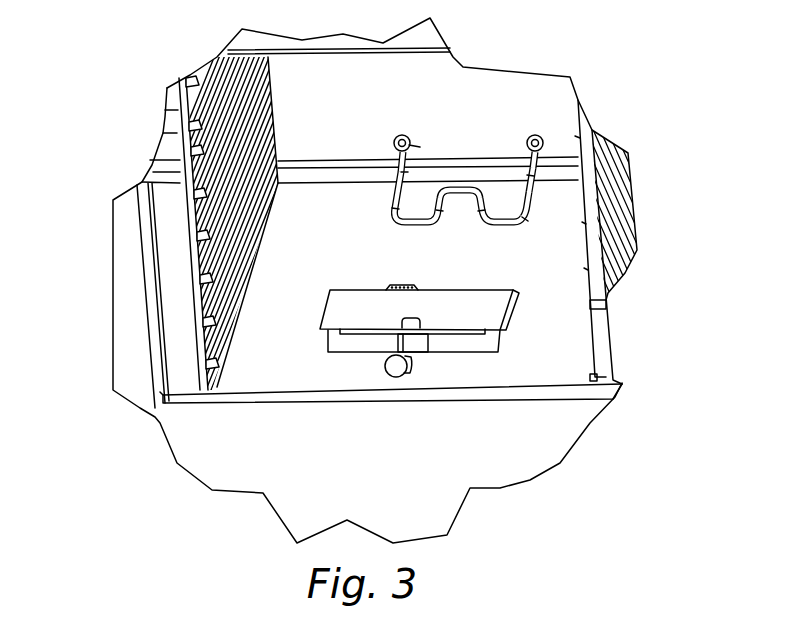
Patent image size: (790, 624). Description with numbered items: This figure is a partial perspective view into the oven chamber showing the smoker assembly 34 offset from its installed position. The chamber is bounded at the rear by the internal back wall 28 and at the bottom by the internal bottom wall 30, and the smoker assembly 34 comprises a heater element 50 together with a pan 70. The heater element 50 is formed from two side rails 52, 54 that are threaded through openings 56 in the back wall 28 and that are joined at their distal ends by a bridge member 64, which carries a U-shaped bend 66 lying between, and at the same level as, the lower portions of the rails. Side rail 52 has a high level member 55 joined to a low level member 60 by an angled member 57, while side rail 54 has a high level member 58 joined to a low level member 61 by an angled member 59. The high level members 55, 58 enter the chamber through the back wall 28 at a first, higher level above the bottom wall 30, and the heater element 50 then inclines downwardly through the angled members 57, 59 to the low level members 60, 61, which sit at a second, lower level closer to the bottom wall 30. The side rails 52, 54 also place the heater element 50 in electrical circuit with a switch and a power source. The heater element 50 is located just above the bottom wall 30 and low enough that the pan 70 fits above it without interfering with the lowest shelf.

The internal back wall 28 is at (292, 90).
The internal bottom wall 30 is at (258, 323).
The smoker assembly 34 is at (291, 345).
The heater element 50 is at (450, 154).
The side rail 52 is at (360, 195).
The side rail 54 is at (556, 185).
The high level member 55 is at (412, 146).
The openings 56 is at (404, 135).
The angled member 57 is at (420, 172).
The high level member 58 is at (527, 142).
The angled member 59 is at (520, 163).
The low level member 60 is at (386, 203).
The low level member 61 is at (524, 212).
The bridge member 64 is at (492, 225).
The U-shaped bend 66 is at (455, 203).
The pan 70 is at (522, 339).